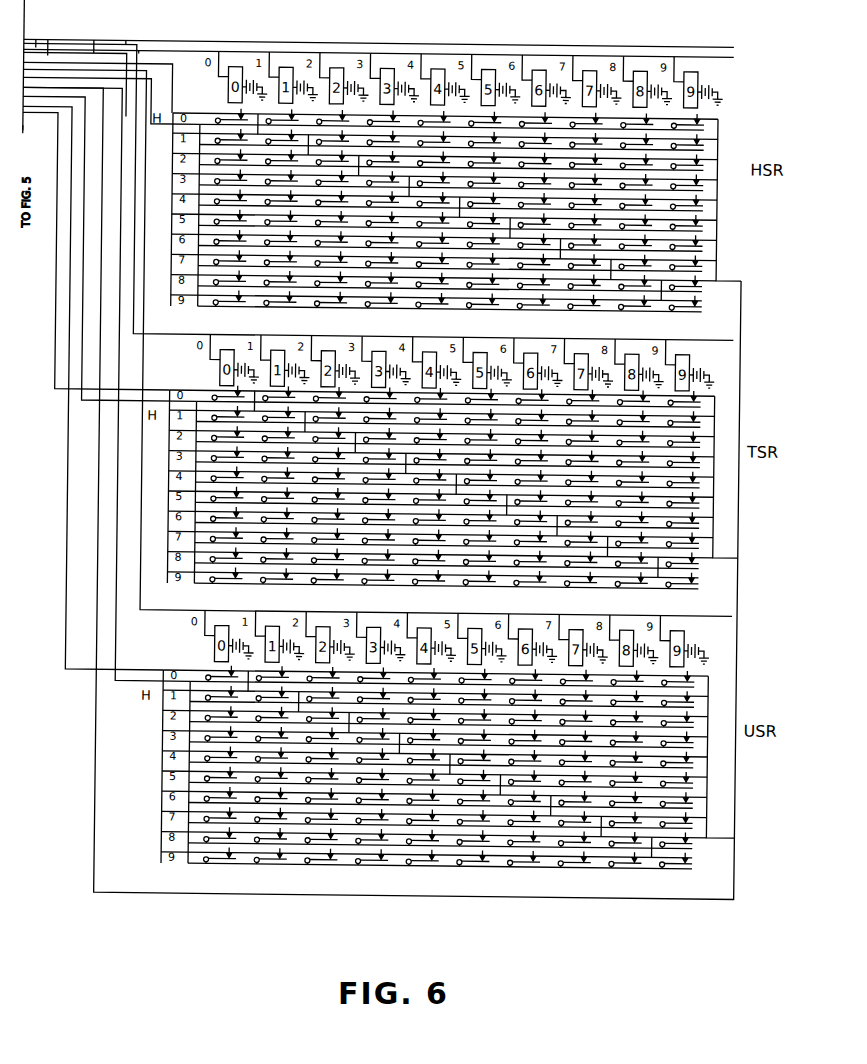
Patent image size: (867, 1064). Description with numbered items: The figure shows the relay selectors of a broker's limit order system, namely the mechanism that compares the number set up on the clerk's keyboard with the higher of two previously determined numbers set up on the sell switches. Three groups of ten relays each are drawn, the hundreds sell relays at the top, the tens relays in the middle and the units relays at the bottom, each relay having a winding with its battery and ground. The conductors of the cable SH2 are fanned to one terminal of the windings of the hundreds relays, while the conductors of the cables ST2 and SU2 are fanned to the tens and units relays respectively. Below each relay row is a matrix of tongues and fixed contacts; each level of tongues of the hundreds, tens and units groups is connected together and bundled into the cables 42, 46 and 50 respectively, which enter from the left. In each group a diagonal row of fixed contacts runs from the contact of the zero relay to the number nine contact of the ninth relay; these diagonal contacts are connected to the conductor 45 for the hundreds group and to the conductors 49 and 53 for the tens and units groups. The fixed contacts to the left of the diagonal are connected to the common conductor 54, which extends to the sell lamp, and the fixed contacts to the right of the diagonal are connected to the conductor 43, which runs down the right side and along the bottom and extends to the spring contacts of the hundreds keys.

The cable 42 is at (62, 40).
The conductor 43 is at (740, 606).
The conductor 45 is at (24, 124).
The cable 46 is at (80, 258).
The conductor 49 is at (53, 322).
The cable 50 is at (67, 506).
The conductor 53 is at (36, 40).
The common conductor 54 is at (132, 321).
The cable SH2 is at (88, 44).
The cable ST2 is at (120, 48).
The cable SU2 is at (133, 54).